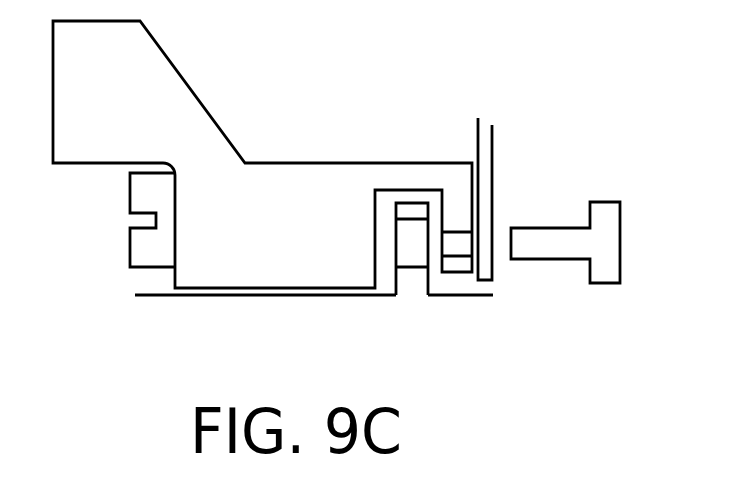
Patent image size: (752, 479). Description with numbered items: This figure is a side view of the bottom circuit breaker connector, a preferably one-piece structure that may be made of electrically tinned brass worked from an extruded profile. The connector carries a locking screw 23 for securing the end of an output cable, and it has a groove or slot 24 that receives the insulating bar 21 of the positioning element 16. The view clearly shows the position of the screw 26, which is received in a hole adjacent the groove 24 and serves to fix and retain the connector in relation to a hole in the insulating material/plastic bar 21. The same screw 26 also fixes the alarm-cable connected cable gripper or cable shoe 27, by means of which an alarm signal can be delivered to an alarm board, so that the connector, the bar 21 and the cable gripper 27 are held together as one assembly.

The groove or slot 24 is at (387, 144).
The locking screw 23 is at (147, 253).
The positioning element 16 is at (314, 320).
The insulating bar 21 is at (412, 287).
The cable gripper 27 is at (483, 143).
The screw 26 is at (613, 243).